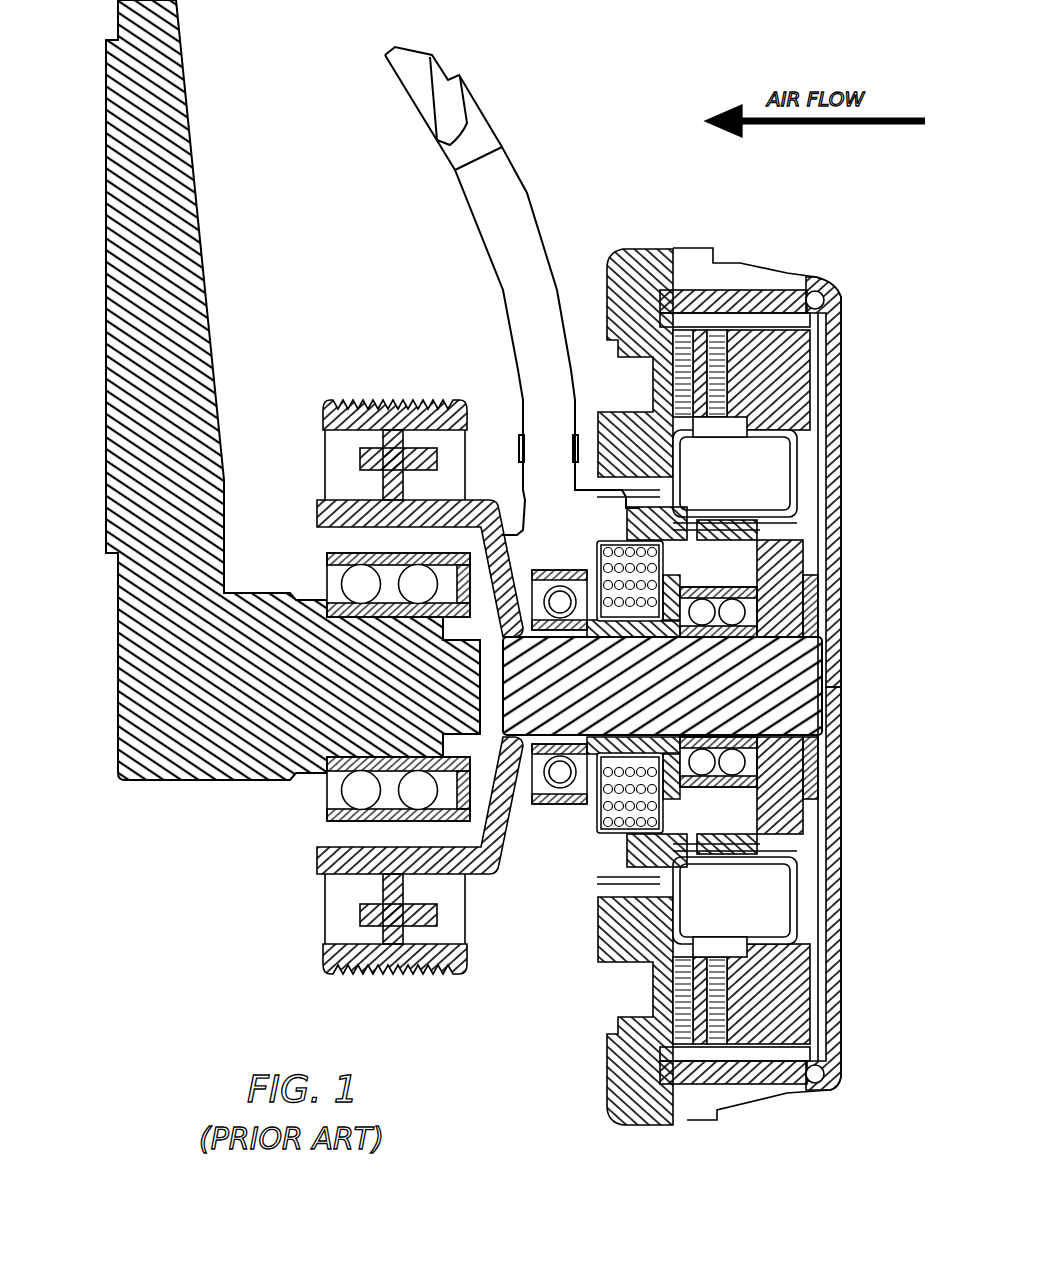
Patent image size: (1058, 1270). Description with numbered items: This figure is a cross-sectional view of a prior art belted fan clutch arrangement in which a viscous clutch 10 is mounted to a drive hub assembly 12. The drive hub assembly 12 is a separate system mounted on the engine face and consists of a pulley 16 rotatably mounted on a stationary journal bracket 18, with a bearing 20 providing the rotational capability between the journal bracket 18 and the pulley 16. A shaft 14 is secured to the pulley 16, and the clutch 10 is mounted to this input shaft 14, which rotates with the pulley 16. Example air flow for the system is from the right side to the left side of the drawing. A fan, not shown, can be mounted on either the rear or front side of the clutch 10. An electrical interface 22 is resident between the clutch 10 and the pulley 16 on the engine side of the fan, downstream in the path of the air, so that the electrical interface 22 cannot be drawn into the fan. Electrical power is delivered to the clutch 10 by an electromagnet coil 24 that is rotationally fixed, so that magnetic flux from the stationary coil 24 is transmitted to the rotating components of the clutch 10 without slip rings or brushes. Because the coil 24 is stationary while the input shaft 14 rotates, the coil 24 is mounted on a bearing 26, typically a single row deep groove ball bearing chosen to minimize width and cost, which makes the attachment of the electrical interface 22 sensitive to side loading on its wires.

The viscous clutch 10 is at (846, 330).
The drive hub assembly 12 is at (287, 845).
The shaft 14 is at (659, 705).
The pulley 16 is at (385, 405).
The stationary journal bracket 18 is at (185, 617).
The bearing 20 is at (340, 583).
The electrical interface 22 is at (527, 192).
The electromagnet coil 24 is at (625, 830).
The bearing 26 is at (560, 805).